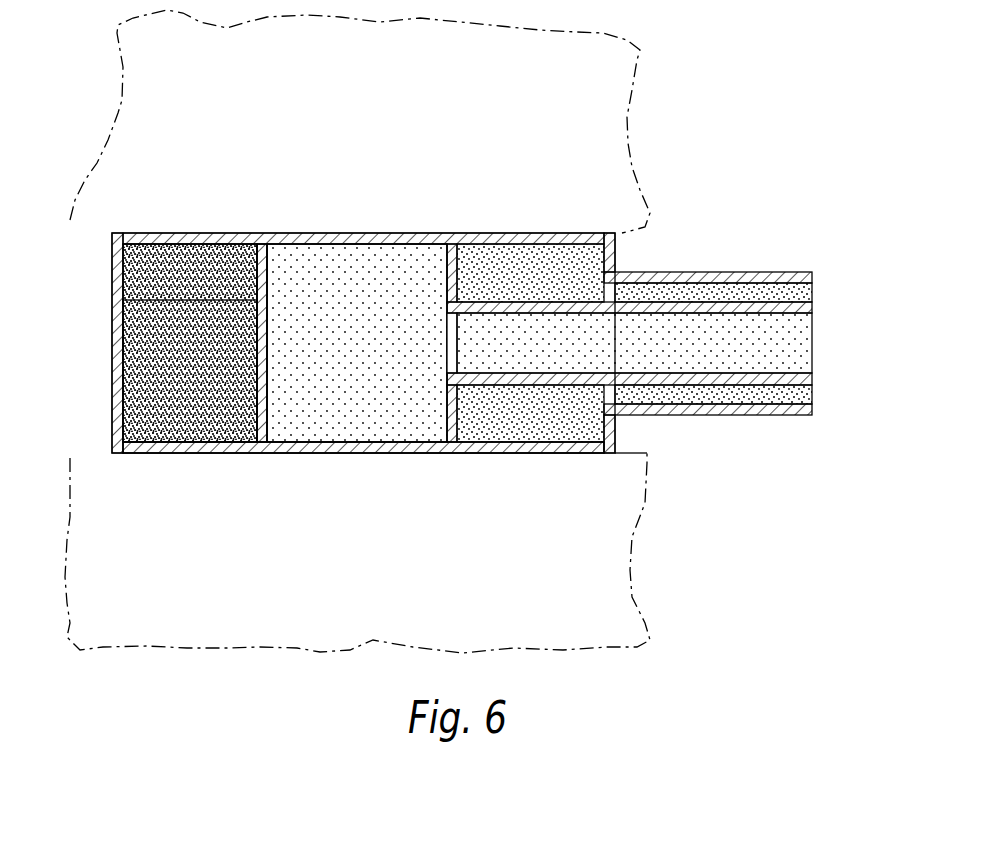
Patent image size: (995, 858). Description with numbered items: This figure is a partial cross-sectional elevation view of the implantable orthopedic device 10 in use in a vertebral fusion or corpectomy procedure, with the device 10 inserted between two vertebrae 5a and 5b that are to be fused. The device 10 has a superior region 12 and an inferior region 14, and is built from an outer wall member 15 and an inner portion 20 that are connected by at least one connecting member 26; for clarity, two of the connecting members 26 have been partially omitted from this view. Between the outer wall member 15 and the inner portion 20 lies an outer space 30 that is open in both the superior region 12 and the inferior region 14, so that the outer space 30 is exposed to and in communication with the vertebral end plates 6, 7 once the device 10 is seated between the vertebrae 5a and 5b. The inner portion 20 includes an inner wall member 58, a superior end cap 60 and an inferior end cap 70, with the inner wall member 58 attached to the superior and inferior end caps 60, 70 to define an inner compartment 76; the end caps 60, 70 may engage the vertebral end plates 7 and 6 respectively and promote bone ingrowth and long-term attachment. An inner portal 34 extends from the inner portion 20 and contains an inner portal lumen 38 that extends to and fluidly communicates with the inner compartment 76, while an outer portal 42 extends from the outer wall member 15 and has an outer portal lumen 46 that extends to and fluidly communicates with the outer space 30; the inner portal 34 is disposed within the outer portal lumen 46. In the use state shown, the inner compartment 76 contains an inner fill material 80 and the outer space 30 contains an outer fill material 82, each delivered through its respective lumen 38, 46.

The vertebra 5a is at (635, 88).
The vertebra 5b is at (630, 565).
The vertebral end plate 6 is at (170, 433).
The vertebral end plate 7 is at (183, 238).
The implantable orthopedic device 10 is at (730, 178).
The superior region 12 is at (112, 233).
The inferior region 14 is at (112, 443).
The outer wall member 15 is at (112, 293).
The inner portion 20 is at (266, 291).
The connecting member 26 is at (495, 235).
The outer space 30 is at (532, 247).
The inner portal 34 is at (735, 387).
The inner portal lumen 38 is at (790, 354).
The outer portal 42 is at (788, 415).
The outer portal lumen 46 is at (804, 292).
The inner wall member 58 is at (275, 412).
The superior end cap 60 is at (352, 235).
The inferior end cap 70 is at (350, 457).
The inner compartment 76 is at (370, 443).
The inner fill material 80 is at (402, 248).
The outer fill material 82 is at (140, 387).